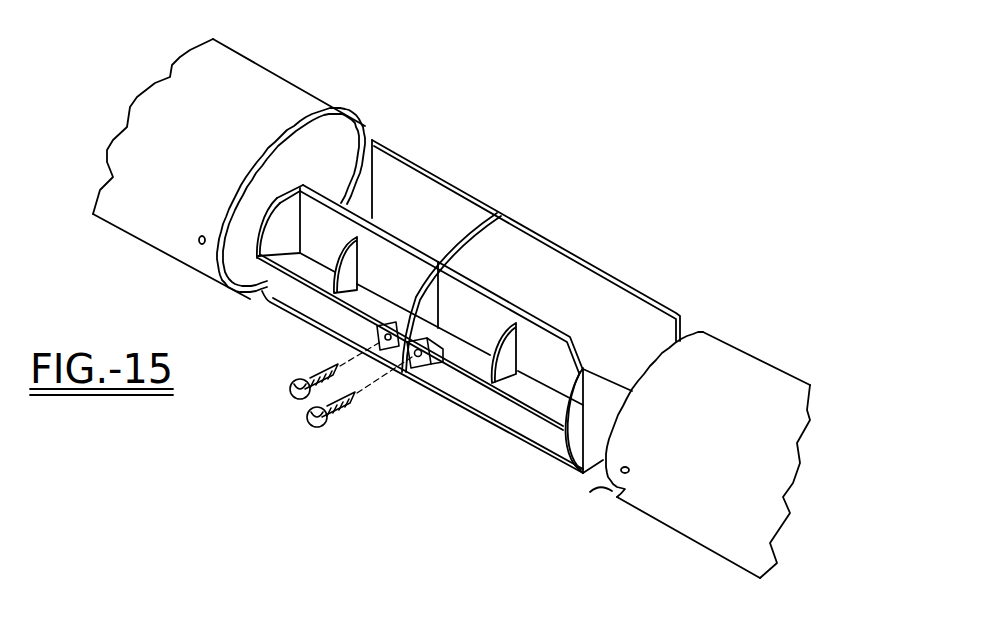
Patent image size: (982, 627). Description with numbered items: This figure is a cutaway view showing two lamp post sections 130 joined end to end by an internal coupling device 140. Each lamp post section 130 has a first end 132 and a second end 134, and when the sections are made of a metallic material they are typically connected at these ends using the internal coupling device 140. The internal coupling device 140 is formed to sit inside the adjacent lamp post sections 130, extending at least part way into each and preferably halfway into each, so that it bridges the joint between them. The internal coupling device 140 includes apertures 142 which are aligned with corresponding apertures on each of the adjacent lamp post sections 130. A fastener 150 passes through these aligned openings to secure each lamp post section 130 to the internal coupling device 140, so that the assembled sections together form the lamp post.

The lamp post section 130 is at (297, 92).
The first end 132 is at (588, 486).
The second end 134 is at (361, 132).
The internal coupling device 140 is at (555, 245).
The aperture 142 is at (381, 338).
The fastener 150 is at (291, 393).